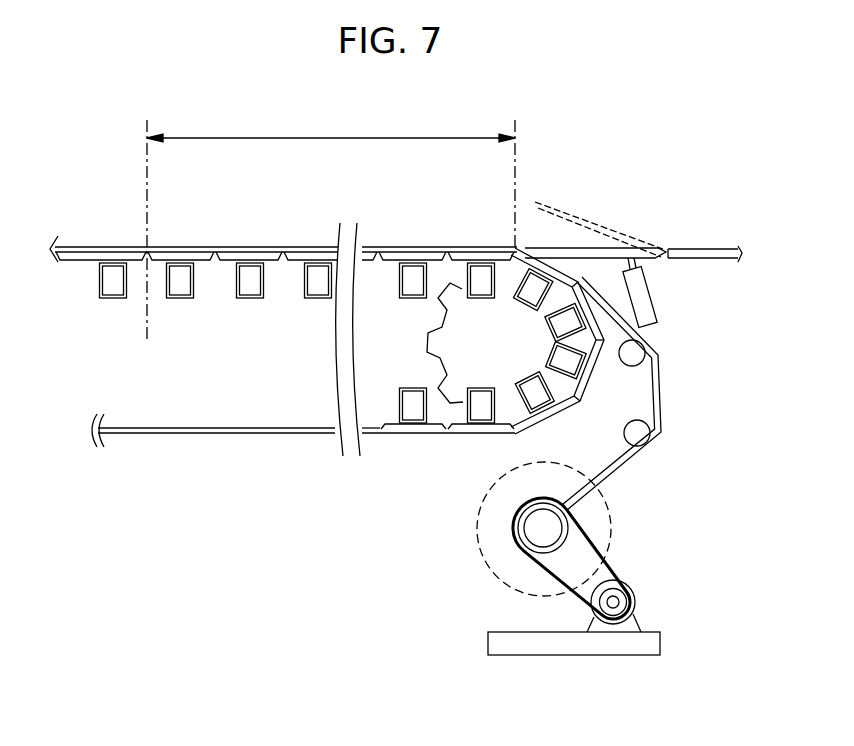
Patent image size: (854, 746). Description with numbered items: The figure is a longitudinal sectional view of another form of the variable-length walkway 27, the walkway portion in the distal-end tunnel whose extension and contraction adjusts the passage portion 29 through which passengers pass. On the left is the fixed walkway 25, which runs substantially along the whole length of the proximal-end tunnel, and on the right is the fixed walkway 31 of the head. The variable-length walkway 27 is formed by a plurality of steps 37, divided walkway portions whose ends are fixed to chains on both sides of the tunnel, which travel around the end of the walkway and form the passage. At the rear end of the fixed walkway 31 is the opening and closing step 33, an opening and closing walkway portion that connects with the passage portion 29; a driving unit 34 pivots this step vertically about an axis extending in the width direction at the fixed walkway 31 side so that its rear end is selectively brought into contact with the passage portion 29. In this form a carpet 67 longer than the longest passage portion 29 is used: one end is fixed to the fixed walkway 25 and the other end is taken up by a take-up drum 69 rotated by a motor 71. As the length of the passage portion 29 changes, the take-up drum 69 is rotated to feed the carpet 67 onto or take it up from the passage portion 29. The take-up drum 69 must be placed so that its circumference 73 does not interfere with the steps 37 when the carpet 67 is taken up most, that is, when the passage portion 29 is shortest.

The fixed walkway 25 is at (91, 247).
The variable-length walkway 27 is at (264, 226).
The passage portion 29 is at (311, 138).
The fixed walkway 31 is at (716, 252).
The opening and closing step 33 is at (588, 258).
The driving unit 34 is at (646, 299).
The steps 37 is at (212, 305).
The carpet 67 is at (658, 388).
The take-up drum 69 is at (565, 537).
The motor 71 is at (638, 599).
The circumference 73 is at (477, 521).